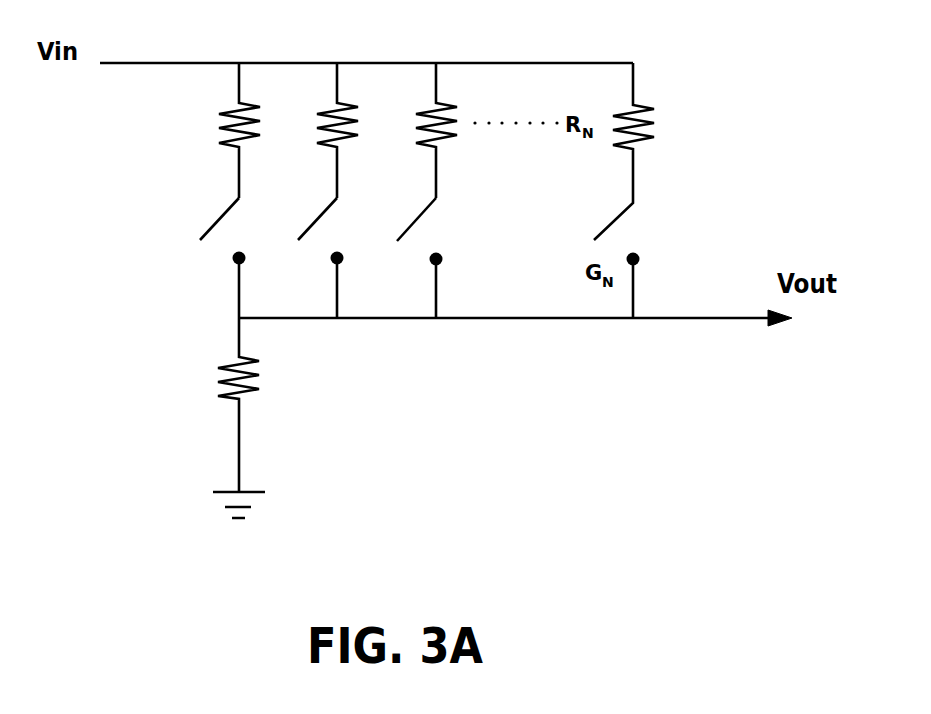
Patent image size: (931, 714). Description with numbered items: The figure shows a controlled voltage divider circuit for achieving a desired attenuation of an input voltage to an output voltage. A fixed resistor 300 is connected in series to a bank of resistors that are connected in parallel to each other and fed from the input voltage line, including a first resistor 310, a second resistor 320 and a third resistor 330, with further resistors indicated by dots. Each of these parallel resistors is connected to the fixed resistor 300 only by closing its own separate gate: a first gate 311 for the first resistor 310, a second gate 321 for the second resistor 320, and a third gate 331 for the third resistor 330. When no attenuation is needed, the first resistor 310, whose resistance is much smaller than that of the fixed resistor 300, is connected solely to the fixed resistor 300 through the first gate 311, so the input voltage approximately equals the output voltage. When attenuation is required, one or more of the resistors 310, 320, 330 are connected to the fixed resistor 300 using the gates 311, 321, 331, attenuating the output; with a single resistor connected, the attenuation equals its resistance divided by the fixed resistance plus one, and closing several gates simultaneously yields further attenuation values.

The fixed resistor R11 300 is at (239, 450).
The resistor R0 310 is at (239, 63).
The gate G0 311 is at (217, 222).
The resistor R1 320 is at (337, 63).
The gate G1 321 is at (314, 222).
The resistor R2 330 is at (436, 63).
The gate G2 331 is at (420, 222).